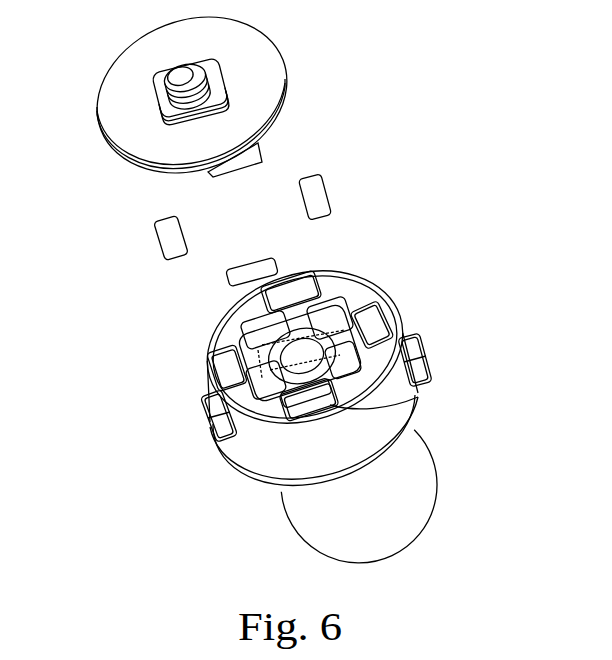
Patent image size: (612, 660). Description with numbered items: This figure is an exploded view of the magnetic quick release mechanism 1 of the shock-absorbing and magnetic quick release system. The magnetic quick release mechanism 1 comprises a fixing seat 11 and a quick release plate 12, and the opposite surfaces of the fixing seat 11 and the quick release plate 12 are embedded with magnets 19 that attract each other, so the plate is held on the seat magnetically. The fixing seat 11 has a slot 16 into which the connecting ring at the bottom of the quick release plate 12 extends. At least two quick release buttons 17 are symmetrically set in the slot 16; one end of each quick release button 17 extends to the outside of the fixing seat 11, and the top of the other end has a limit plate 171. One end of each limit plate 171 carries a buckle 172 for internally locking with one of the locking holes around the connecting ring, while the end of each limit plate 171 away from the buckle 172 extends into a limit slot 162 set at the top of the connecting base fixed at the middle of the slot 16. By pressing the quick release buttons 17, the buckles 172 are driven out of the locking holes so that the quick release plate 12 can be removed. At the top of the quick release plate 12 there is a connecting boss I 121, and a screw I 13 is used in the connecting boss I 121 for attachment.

The magnetic quick release mechanism 1 is at (358, 278).
The fixing seat 11 is at (283, 446).
The quick release plate 12 is at (130, 125).
The connecting boss I 121 is at (152, 80).
The screw I 13 is at (197, 68).
The slot 16 is at (292, 321).
The limit slot 162 is at (315, 290).
The quick release button 17 is at (418, 358).
The limit plate 171 is at (352, 393).
The buckle 172 is at (203, 412).
The magnet 19 is at (372, 328).